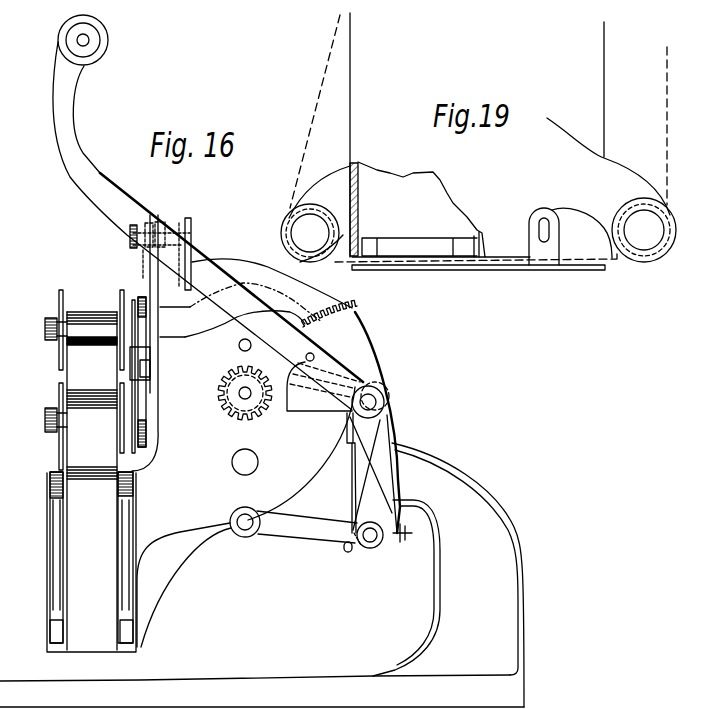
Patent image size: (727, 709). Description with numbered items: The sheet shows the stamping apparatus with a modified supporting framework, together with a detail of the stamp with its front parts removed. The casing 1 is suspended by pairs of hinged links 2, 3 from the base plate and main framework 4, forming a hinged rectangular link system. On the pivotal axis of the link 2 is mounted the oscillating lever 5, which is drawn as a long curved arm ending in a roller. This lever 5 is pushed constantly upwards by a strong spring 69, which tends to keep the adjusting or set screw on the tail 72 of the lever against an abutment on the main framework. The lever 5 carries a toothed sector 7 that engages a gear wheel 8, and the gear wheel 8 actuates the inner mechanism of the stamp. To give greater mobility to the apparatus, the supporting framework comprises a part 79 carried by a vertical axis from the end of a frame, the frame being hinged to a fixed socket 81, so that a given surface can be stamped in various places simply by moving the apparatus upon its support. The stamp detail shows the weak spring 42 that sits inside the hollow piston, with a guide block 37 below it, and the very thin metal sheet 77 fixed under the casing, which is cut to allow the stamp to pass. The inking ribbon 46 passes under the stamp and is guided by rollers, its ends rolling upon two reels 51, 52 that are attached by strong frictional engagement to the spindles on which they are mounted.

In FIG. 16, the casing 1 is at (232, 462).
In FIG. 16, the hinged link 2 is at (323, 382).
In FIG. 16, the hinged link 3 is at (293, 526).
In FIG. 16, the base plate and main framework 4 is at (268, 453).
In FIG. 16, the oscillating lever 5 is at (416, 426).
In FIG. 16, the toothed sector 7 is at (352, 316).
In FIG. 16, the gear wheel 8 is at (218, 394).
In FIG. 19, the guide block 37 is at (407, 250).
In FIG. 19, the weak spring 42 is at (421, 209).
In FIG. 16, the inking ribbon 46 is at (98, 471).
In FIG. 19, the inking ribbon 46 is at (302, 137).
In FIG. 16, the reel 51 is at (58, 300).
In FIG. 16, the reel 52 is at (58, 453).
In FIG. 16, the strong spring 69 is at (366, 480).
In FIG. 16, the tail of the lever 72 is at (384, 555).
In FIG. 19, the thin metal sheet 77 is at (478, 280).
In FIG. 16, the part carried by a vertical axis 79 is at (386, 393).
In FIG. 16, the fixed socket 81 is at (262, 575).